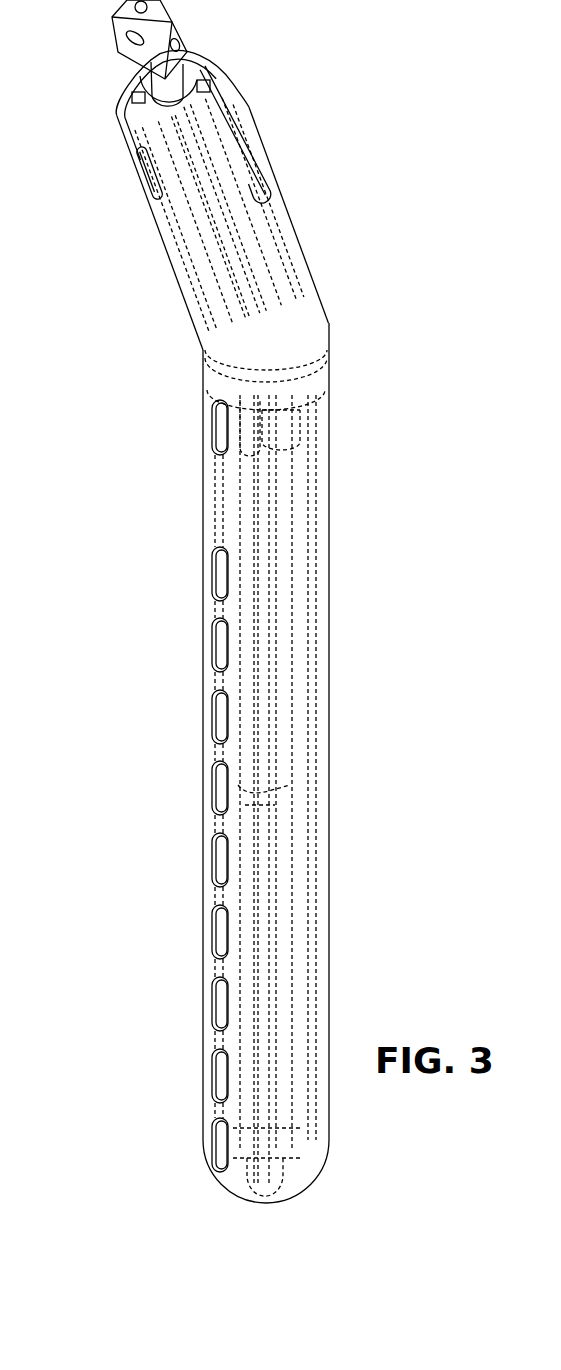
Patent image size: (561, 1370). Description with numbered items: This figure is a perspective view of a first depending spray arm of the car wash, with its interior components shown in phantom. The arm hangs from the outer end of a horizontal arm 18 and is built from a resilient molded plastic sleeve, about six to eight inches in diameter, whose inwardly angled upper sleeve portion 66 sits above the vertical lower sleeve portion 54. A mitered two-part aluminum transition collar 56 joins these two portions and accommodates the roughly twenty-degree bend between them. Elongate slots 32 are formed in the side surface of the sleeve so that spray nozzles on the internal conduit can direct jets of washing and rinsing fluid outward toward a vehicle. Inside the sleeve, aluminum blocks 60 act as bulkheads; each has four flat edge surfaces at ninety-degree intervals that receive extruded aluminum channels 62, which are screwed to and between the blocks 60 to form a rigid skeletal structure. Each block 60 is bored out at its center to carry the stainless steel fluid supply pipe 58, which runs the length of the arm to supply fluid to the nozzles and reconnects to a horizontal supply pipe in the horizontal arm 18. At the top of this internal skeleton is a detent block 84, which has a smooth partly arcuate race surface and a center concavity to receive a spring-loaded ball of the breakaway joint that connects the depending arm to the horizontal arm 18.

The left horizontal arm 18 is at (222, 617).
The elongate slots 32 is at (212, 928).
The plastic sleeve 54 is at (330, 718).
The transition collar 56 is at (331, 325).
The fluid delivery conduit 58 is at (278, 425).
The aluminum blocks 60 is at (250, 447).
The extruded aluminum channels 62 is at (302, 540).
The upper sleeve portion 66 is at (163, 250).
The detent block 84 is at (112, 38).